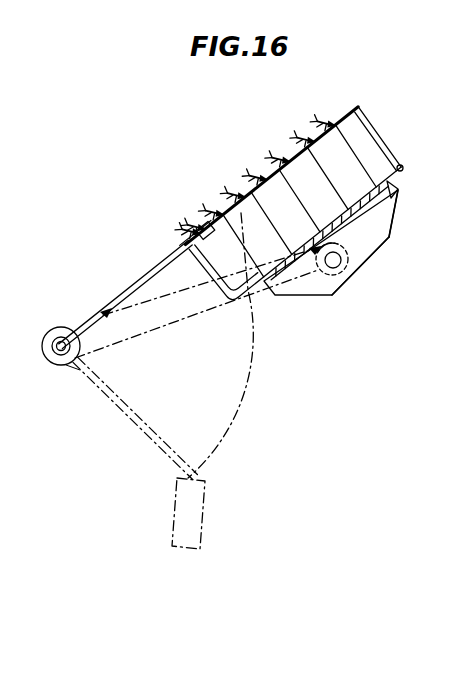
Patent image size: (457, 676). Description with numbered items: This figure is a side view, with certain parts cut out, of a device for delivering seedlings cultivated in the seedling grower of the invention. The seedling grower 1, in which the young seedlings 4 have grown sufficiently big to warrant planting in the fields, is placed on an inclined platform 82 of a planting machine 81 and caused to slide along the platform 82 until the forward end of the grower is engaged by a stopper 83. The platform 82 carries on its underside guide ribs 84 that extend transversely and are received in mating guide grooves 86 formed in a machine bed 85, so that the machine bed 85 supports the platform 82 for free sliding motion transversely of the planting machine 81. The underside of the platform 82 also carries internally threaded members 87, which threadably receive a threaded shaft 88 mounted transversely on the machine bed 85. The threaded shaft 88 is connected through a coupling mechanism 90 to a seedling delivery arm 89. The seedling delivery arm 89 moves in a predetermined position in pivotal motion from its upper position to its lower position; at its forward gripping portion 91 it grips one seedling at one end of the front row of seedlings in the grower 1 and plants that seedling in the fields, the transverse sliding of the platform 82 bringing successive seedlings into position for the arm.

The seedling grower 1 is at (363, 142).
The seedlings 4 is at (331, 113).
The planting machine 81 is at (347, 278).
The inclined platform 82 is at (402, 168).
The stopper 83 is at (190, 244).
The guide ribs 84 is at (398, 191).
The machine bed 85 is at (382, 244).
The guide grooves 86 is at (395, 206).
The internally threaded members 87 is at (345, 267).
The threaded shaft 88 is at (337, 274).
The seedling delivery arm 89 is at (113, 299).
The coupling mechanism 90 is at (178, 330).
The forward gripping portion 91 is at (204, 226).